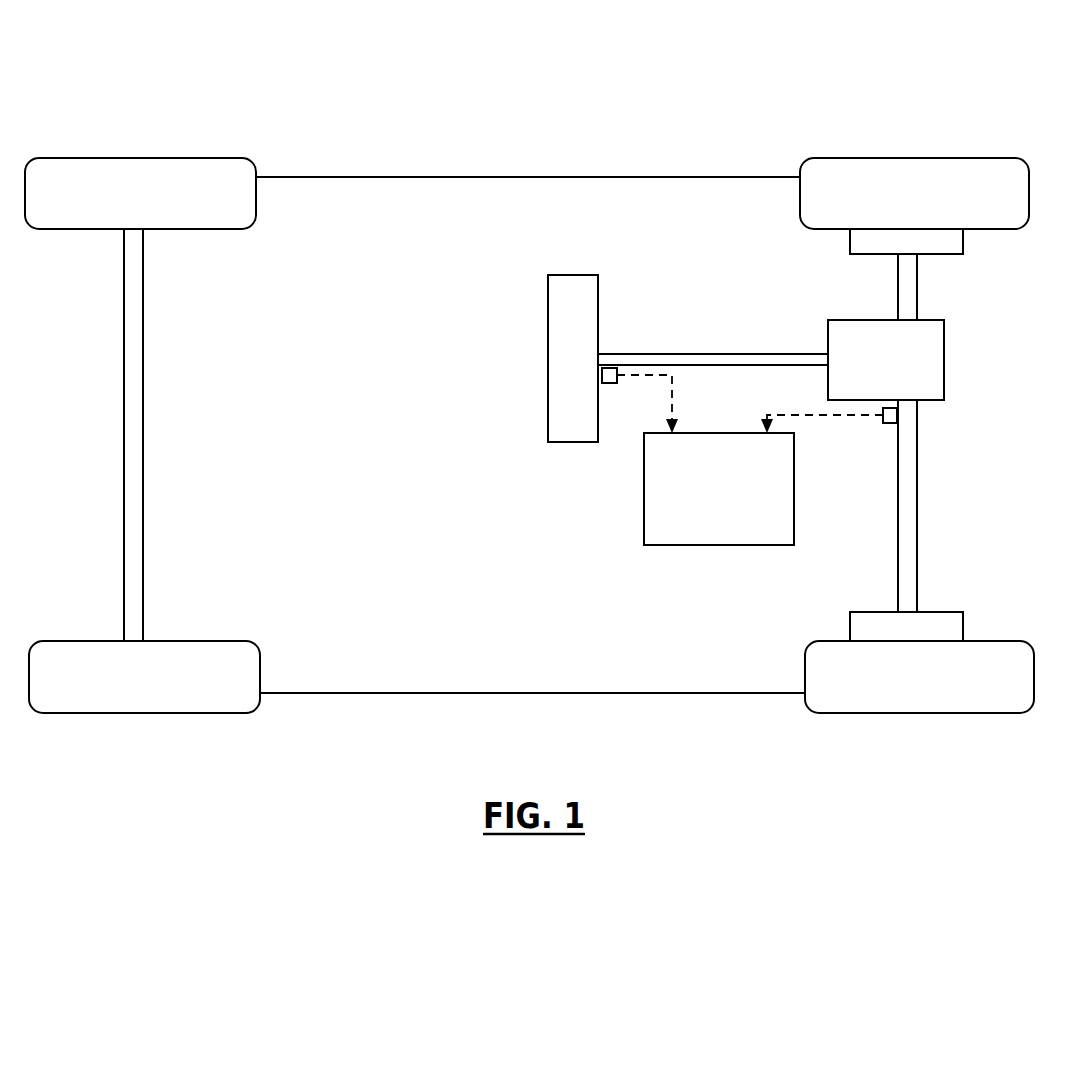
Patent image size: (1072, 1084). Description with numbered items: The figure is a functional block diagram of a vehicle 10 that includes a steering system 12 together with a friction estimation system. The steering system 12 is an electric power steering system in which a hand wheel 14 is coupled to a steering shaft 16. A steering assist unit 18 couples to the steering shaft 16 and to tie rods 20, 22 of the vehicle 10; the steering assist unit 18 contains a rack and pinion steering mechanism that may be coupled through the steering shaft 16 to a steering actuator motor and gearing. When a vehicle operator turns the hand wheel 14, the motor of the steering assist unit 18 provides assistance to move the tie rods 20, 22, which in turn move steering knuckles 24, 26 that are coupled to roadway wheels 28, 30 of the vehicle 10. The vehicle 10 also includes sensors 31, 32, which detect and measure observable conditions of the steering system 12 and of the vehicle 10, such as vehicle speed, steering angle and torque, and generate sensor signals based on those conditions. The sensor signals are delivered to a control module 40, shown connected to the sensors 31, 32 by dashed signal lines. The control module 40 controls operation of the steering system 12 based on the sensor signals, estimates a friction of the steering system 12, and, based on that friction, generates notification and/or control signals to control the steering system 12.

The vehicle 10 is at (571, 78).
The steering system 12 is at (683, 249).
The hand wheel 14 is at (573, 274).
The steering shaft 16 is at (684, 353).
The steering assist unit 18 is at (944, 358).
The tie rod 20 is at (918, 298).
The tie rod 22 is at (917, 480).
The steering knuckle 24 is at (849, 234).
The steering knuckle 26 is at (850, 630).
The roadway wheel 28 is at (953, 157).
The roadway wheel 30 is at (972, 640).
The sensor 31 is at (606, 384).
The sensor 32 is at (890, 424).
The control module 40 is at (730, 498).